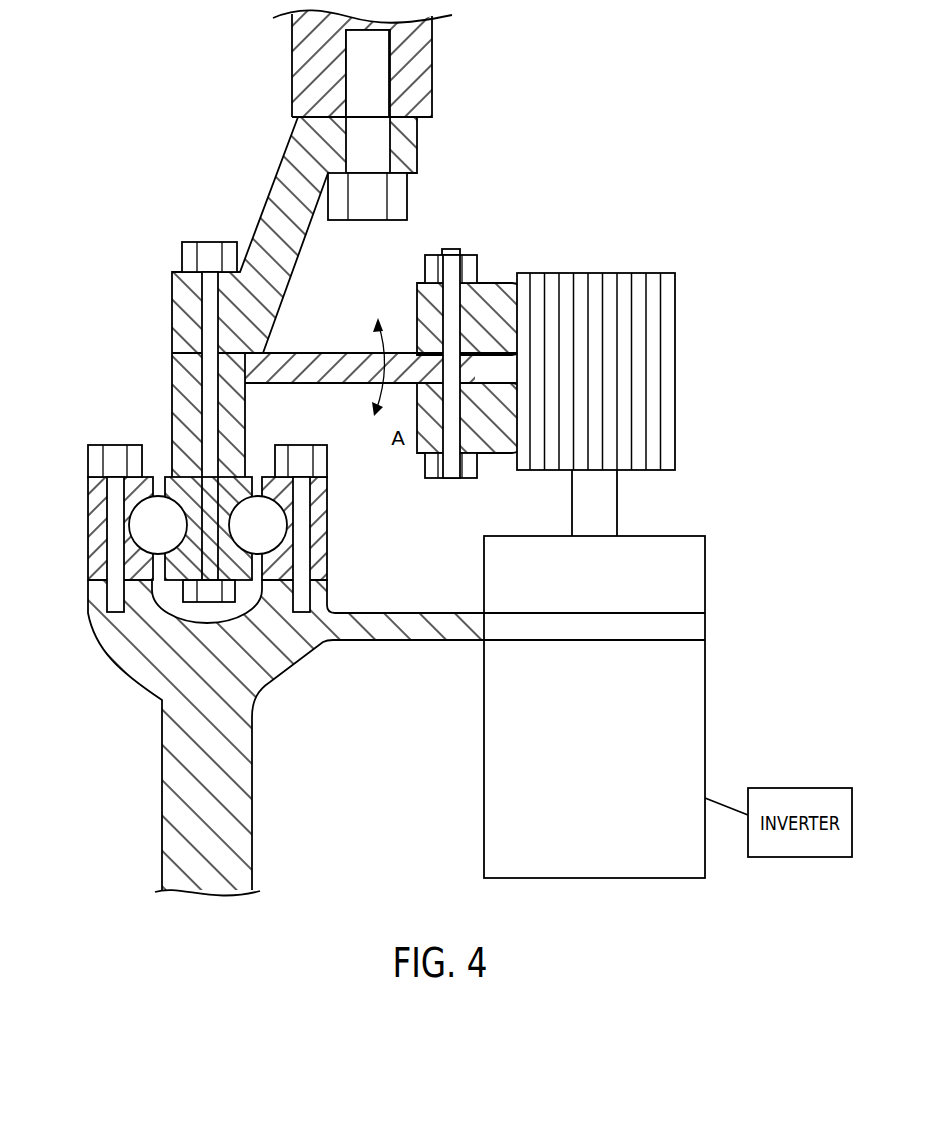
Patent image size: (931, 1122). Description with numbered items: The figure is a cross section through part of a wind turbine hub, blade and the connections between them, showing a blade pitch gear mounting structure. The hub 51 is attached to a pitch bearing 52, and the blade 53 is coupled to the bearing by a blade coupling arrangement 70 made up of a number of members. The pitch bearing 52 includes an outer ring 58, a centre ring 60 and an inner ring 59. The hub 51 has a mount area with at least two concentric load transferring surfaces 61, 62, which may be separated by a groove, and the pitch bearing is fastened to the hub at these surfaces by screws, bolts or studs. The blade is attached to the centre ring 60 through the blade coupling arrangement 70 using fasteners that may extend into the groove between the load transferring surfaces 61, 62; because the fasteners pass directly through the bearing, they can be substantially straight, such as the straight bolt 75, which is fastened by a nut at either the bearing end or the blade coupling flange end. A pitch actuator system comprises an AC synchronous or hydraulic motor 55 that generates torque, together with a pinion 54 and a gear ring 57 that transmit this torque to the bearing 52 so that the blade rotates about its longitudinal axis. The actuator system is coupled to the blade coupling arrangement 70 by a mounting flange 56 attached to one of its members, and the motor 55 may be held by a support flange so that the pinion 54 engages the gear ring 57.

The hub 51 is at (177, 787).
The pitch bearing 52 is at (197, 559).
The blade 53 is at (308, 68).
The pinion 54 is at (662, 363).
The motor 55 is at (690, 705).
The mounting flange 56 is at (330, 353).
The gear ring 57 is at (485, 440).
The outer ring 58 is at (123, 490).
The inner ring 59 is at (320, 528).
The centre ring 60 is at (188, 497).
The load transferring surface 61 is at (137, 580).
The load transferring surface 62 is at (270, 580).
The blade coupling arrangement 70 is at (196, 205).
The straight bolt 75 is at (207, 305).